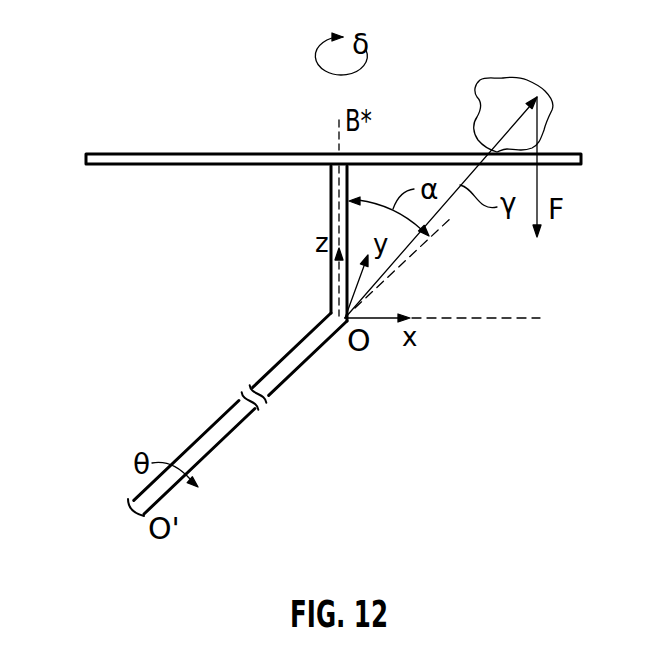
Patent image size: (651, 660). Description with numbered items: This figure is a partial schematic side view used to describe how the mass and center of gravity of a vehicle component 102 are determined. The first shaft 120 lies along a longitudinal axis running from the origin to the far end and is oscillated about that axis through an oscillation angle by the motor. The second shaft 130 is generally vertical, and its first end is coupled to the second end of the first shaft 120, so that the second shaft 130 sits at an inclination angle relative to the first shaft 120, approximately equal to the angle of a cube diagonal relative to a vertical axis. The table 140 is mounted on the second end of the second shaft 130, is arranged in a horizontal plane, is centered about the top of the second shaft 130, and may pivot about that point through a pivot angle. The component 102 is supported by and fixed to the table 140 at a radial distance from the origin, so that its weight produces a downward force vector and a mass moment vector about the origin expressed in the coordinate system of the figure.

The table 140 is at (100, 152).
The second shaft 130 is at (328, 185).
The first shaft 120 is at (226, 417).
The vehicle component 102 is at (520, 75).